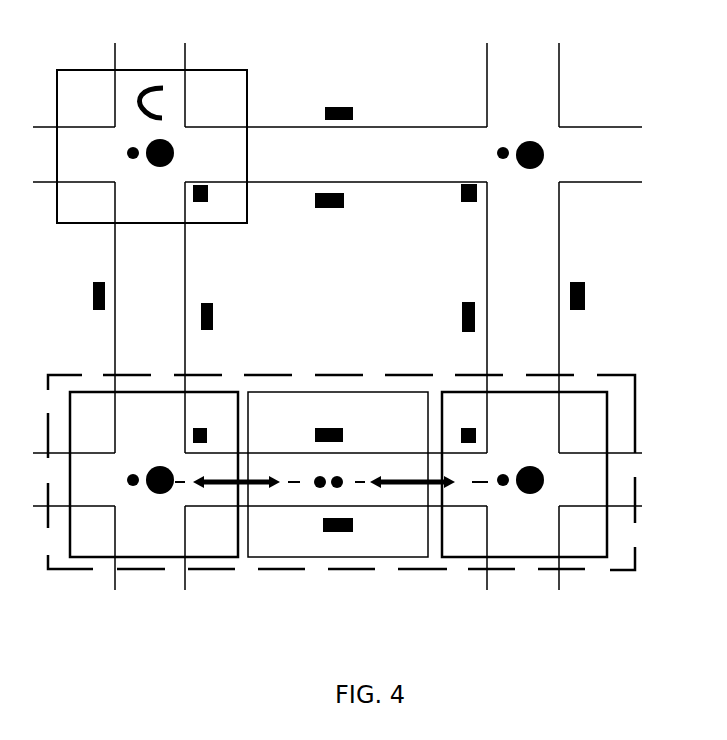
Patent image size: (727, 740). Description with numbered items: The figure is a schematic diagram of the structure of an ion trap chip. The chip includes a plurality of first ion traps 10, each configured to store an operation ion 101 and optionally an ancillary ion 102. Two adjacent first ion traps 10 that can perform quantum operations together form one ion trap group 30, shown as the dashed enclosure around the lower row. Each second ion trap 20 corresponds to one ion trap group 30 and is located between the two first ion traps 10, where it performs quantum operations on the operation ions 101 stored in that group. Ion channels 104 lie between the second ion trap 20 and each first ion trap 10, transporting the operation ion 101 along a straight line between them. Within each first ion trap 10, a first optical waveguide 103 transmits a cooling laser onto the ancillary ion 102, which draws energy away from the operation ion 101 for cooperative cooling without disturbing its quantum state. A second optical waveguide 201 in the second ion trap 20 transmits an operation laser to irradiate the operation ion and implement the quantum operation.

The first ion trap 10 is at (575, 345).
The operation ion 101 is at (382, 430).
The ancillary ion 102 is at (175, 147).
The first optical waveguide 103 is at (210, 187).
The ion channel 104 is at (492, 428).
The second ion trap 20 is at (308, 392).
The second optical waveguide 201 is at (332, 427).
The ion trap group 30 is at (623, 425).